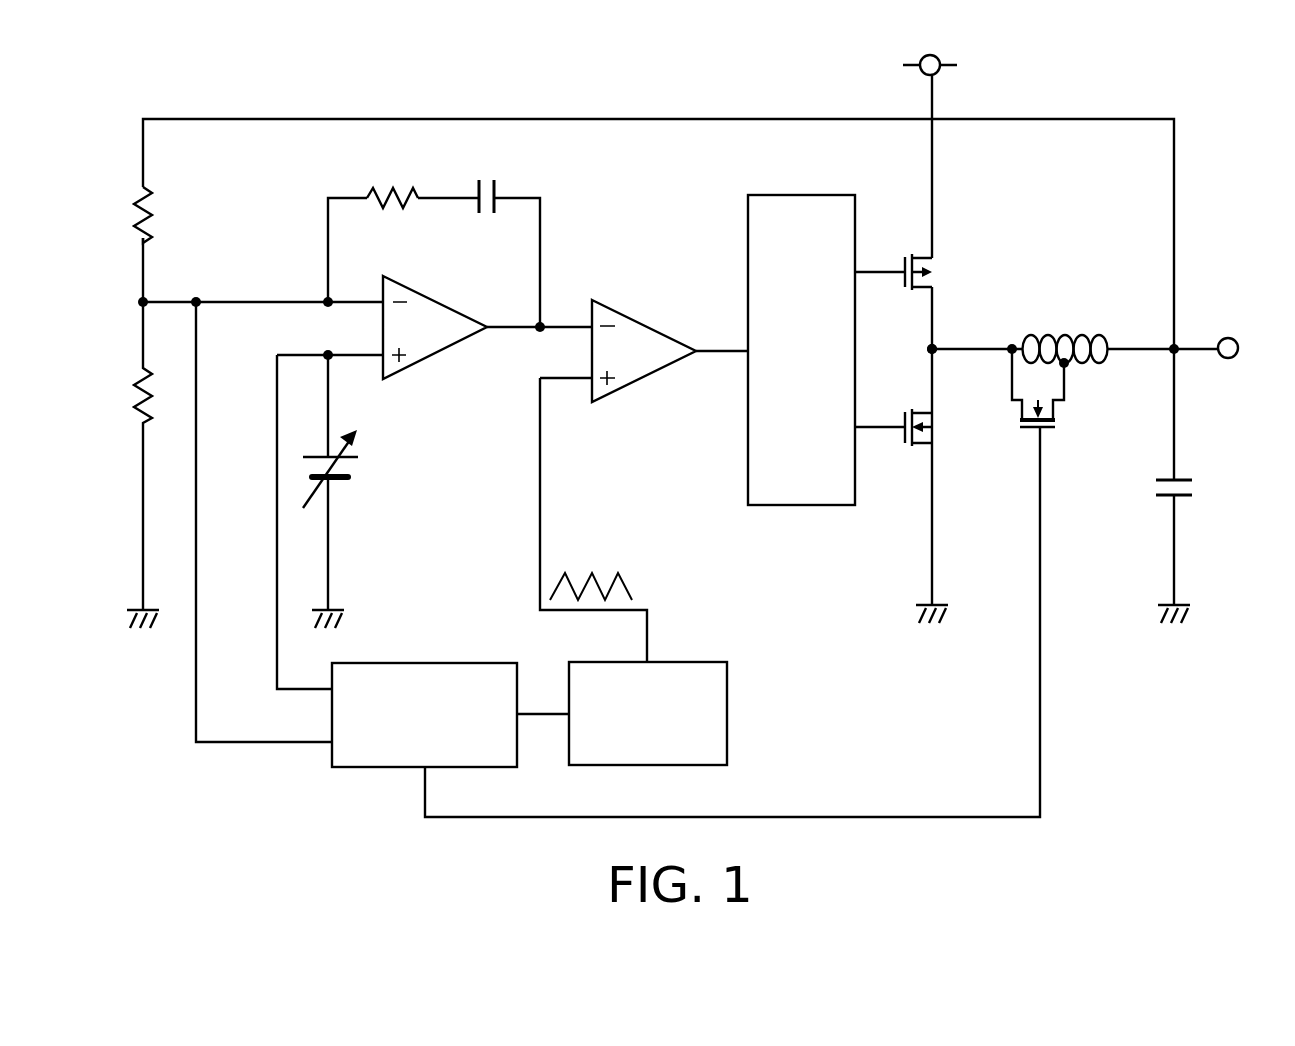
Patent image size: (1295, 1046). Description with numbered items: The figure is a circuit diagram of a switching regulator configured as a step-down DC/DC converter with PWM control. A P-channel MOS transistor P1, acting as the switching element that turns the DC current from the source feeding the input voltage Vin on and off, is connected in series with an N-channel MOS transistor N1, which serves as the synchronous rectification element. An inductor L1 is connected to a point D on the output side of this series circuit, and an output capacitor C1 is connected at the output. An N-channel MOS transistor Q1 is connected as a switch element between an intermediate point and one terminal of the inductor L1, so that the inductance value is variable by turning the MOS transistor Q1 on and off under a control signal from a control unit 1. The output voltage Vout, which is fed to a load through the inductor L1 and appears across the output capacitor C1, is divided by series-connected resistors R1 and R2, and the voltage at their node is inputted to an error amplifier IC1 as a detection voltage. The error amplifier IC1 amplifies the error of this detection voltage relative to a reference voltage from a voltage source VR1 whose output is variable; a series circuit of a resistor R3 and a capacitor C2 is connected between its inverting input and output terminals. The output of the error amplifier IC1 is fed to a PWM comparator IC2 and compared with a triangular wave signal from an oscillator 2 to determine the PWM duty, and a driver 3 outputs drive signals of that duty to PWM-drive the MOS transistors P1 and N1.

The control unit 1 is at (410, 663).
The oscillator 2 is at (677, 662).
The driver 3 is at (800, 195).
The resistor R1 is at (130, 213).
The resistor R2 is at (130, 393).
The resistor R3 is at (393, 182).
The output capacitor C1 is at (1190, 484).
The capacitor C2 is at (478, 182).
The error amplifier IC1 is at (423, 291).
The PWM comparator IC2 is at (637, 321).
The voltage source VR1 is at (356, 472).
The P-channel MOS transistor P1 is at (938, 284).
The N-channel MOS transistor N1 is at (938, 433).
The inductor L1 is at (1068, 330).
The N-channel MOS transistor Q1 is at (1066, 426).
The point D is at (920, 350).
The input voltage Vin is at (930, 51).
The output voltage Vout is at (1231, 333).